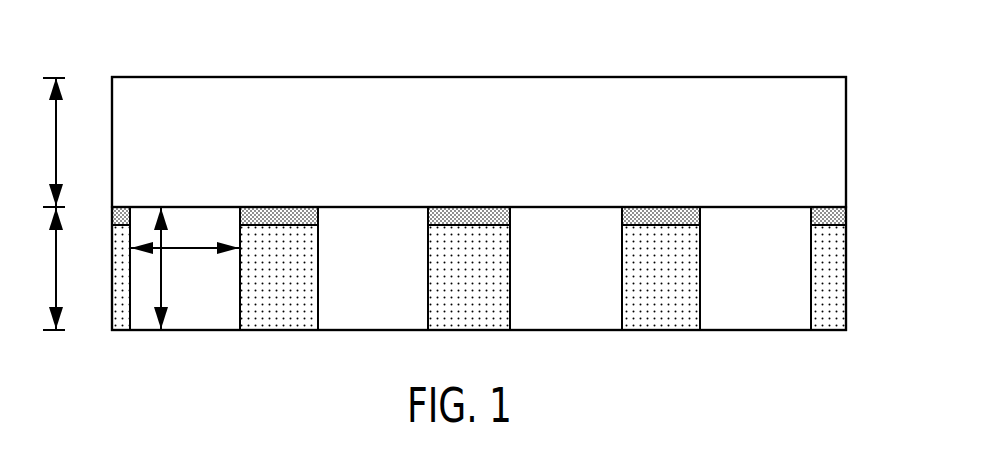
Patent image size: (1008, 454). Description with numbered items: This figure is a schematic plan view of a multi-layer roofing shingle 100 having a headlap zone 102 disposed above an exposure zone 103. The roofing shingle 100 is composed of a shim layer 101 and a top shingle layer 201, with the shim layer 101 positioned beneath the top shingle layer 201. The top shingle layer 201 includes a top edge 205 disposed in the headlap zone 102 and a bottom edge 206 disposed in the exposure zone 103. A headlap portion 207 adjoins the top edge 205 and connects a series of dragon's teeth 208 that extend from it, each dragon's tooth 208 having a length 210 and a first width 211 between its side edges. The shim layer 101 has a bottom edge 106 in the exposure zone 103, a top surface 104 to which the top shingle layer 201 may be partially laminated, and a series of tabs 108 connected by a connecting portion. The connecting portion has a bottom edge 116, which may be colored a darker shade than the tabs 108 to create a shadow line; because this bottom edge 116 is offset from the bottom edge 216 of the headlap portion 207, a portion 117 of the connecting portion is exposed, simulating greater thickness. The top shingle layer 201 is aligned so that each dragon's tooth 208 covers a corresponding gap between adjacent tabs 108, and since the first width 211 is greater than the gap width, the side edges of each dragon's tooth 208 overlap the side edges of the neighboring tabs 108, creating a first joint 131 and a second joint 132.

The roofing shingle 100 is at (549, 49).
The shim layer 101 is at (847, 258).
The headlap zone 102 is at (42, 142).
The exposure zone 103 is at (42, 269).
The top surface 104 is at (457, 318).
The bottom edge 106 is at (637, 332).
The tabs 108 is at (835, 322).
The bottom edge 116 is at (437, 227).
The portion 117 is at (498, 217).
The first joint 131 is at (128, 285).
The second joint 132 is at (242, 279).
The top shingle layer 201 is at (847, 182).
The top edge 205 is at (374, 77).
The bottom edge 206 is at (567, 332).
The headlap portion 207 is at (821, 124).
The dragon's teeth 208 is at (378, 312).
The length 210 is at (173, 268).
The first width 211 is at (185, 236).
The bottom edge 216 is at (445, 205).